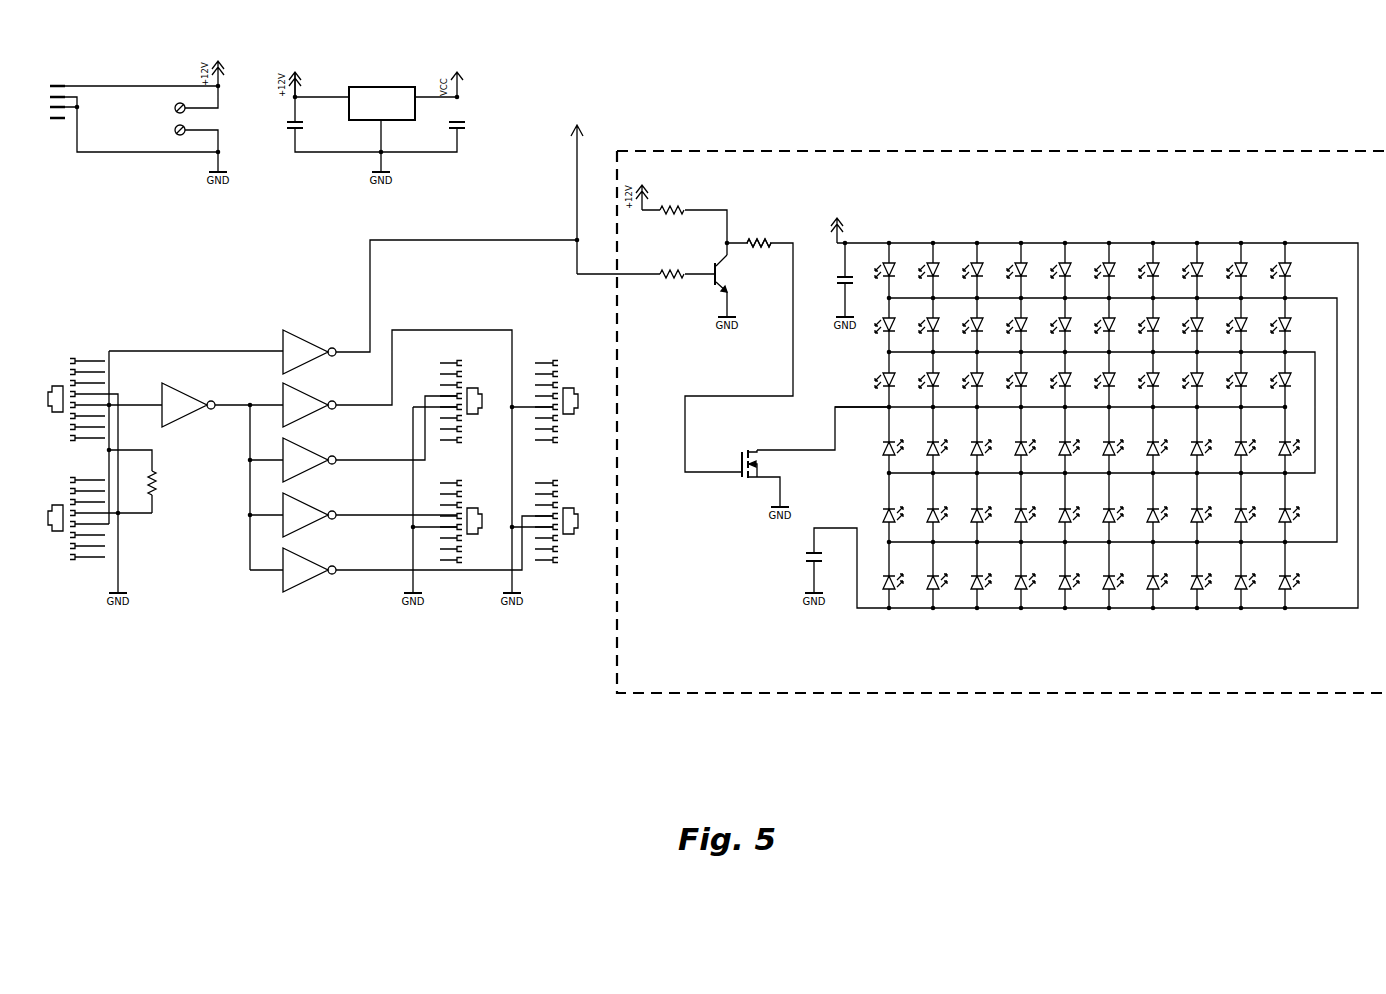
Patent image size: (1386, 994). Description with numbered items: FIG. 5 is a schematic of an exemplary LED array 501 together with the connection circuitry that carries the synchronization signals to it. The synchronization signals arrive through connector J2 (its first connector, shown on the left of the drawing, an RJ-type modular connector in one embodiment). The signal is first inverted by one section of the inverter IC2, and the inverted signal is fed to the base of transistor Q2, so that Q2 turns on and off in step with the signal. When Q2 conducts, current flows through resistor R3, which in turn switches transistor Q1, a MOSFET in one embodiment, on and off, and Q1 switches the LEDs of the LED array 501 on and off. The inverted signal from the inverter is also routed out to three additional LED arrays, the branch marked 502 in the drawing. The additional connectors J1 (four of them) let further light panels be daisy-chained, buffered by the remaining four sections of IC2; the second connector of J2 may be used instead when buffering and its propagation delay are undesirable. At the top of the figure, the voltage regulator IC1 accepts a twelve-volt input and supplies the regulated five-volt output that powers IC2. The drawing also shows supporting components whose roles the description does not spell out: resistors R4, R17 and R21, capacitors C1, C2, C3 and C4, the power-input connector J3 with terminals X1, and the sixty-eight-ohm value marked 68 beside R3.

The LED array 501 is at (1085, 161).
The connection to additional LED arrays 502 is at (692, 103).
The resistor R3 (68 ohm) 68 is at (759, 249).
The voltage regulator IC1 is at (381, 99).
The inverter IC2 is at (260, 459).
The transistor Q1 is at (727, 459).
The transistor Q2 is at (699, 260).
The resistor R3 is at (759, 236).
The resistor 1.5K R4 is at (669, 275).
The resistor 47K R17 is at (670, 210).
The resistor 47K R21 is at (151, 483).
The capacitor 10uF C1 is at (856, 279).
The capacitor 10uF C2 is at (825, 555).
The capacitor 0.33uF C3 is at (311, 125).
The capacitor 0.1uF C4 is at (469, 125).
The additional connectors J1 is at (505, 453).
The connector J2 is at (76, 466).
The connector J3 is at (57, 109).
The terminal X1 is at (168, 117).